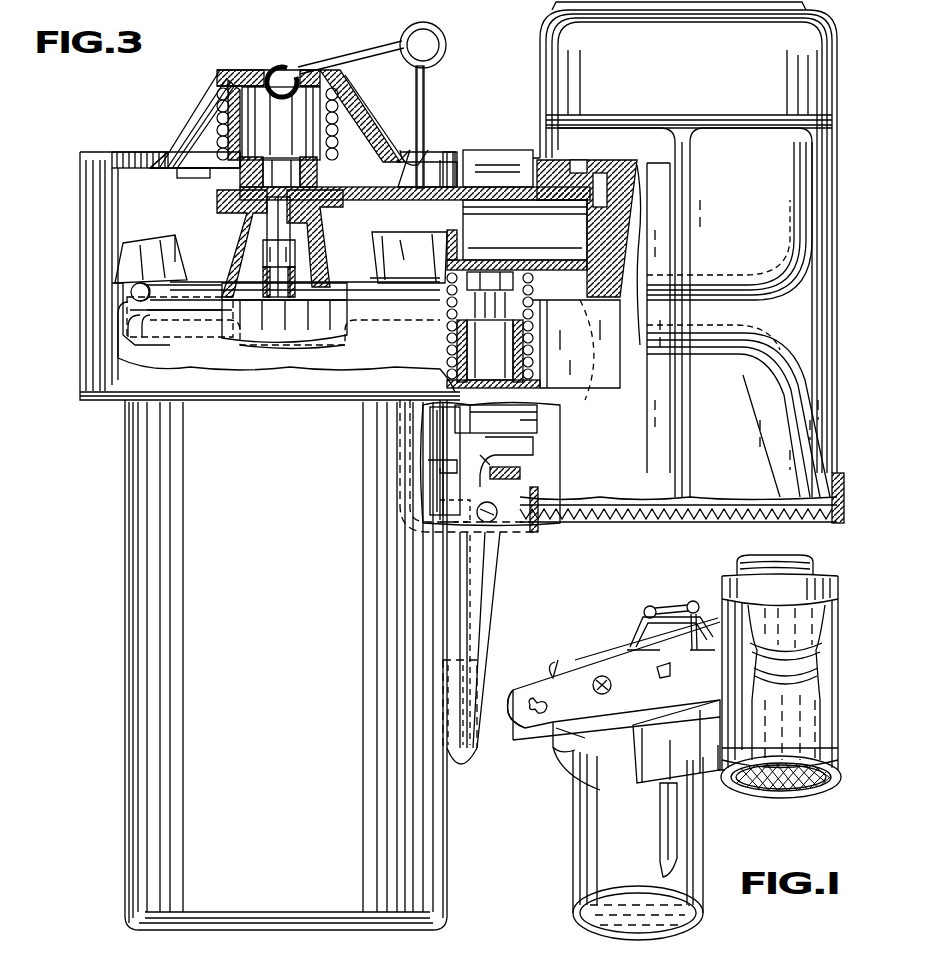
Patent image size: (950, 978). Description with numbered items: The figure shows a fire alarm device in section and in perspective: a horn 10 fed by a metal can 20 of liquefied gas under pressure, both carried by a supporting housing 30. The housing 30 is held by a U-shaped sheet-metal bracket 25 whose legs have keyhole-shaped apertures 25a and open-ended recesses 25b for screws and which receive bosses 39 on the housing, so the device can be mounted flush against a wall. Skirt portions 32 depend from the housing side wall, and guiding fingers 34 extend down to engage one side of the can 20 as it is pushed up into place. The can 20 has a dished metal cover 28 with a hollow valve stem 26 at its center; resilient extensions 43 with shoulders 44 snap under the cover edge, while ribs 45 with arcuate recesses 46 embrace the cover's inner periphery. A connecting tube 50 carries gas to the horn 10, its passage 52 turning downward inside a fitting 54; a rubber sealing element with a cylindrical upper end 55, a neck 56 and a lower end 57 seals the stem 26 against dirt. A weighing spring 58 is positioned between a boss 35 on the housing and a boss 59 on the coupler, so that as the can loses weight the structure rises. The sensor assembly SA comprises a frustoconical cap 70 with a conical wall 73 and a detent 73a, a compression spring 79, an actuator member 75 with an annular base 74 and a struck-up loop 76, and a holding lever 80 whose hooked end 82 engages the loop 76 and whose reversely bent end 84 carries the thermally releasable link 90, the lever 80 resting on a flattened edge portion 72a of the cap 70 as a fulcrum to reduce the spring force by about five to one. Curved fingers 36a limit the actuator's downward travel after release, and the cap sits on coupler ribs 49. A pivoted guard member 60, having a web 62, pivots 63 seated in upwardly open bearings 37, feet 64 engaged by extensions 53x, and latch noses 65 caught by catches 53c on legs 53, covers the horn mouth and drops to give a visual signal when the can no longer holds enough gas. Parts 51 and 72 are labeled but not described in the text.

In FIG. 3, the horn 10 is at (847, 203).
In FIG. 1, the horn 10 is at (812, 630).
In FIG. 3, the metal can 20 is at (286, 665).
In FIG. 1, the metal can 20 is at (592, 850).
In FIG. 1, the U-shaped bracket 25 is at (523, 740).
In FIG. 1, the keyhole shaped apertures 25a is at (537, 716).
In FIG. 1, the open-ended recesses 25b is at (680, 676).
In FIG. 3, the hollow stem 26 is at (300, 280).
In FIG. 3, the dished circular metal cover 28 is at (338, 337).
In FIG. 3, the supporting housing 30 is at (105, 416).
In FIG. 1, the supporting housing 30 is at (614, 685).
In FIG. 3, the skirt portions 32 is at (405, 431).
In FIG. 1, the skirt portions 32 is at (650, 775).
In FIG. 3, the guiding and positioning fingers 34 is at (470, 692).
In FIG. 1, the guiding and positioning fingers 34 is at (664, 822).
In FIG. 3, the spring-positioning boss 35 is at (493, 330).
In FIG. 3, the curved upwardly extending fingers 36a is at (405, 158).
In FIG. 3, the upwardly open bearings 37 is at (445, 517).
In FIG. 1, the bosses 39 is at (596, 679).
In FIG. 3, the downward extensions 43 is at (112, 298).
In FIG. 3, the shoulders 44 is at (135, 318).
In FIG. 3, the ribs 45 is at (150, 272).
In FIG. 3, the arcuate recess 46 is at (136, 298).
In FIG. 3, the ribs 49 is at (200, 178).
In FIG. 3, the connecting tube 50 is at (470, 175).
In FIG. 3, the fitting 51 is at (578, 185).
In FIG. 3, the passage 52 is at (432, 212).
In FIG. 3, the legs 53 is at (480, 420).
In FIG. 3, the catches 53c is at (530, 456).
In FIG. 3, the extensions 53x is at (440, 442).
In FIG. 3, the fitting 54 is at (238, 262).
In FIG. 3, the upper end of sealing element 55 is at (250, 238).
In FIG. 3, the hollow cylindrical neck 56 is at (278, 187).
In FIG. 3, the lower end of sealing element 57 is at (233, 308).
In FIG. 3, the weighing spring 58 is at (537, 352).
In FIG. 3, the boss 59 is at (485, 260).
In FIG. 1, the pivoted guard member 60 is at (820, 801).
In FIG. 3, the web portion 62 is at (512, 505).
In FIG. 3, the pivots 63 is at (478, 517).
In FIG. 3, the feet 64 is at (430, 469).
In FIG. 3, the latch noses 65 is at (522, 477).
In FIG. 3, the cap 70 is at (195, 87).
In FIG. 3, the cap 72 is at (255, 70).
In FIG. 3, the flattened edge portion 72a is at (320, 68).
In FIG. 3, the conical wall 73 is at (206, 102).
In FIG. 3, the detent 73a is at (412, 166).
In FIG. 3, the annular base 74 is at (198, 152).
In FIG. 3, the actuator member 75 is at (338, 138).
In FIG. 3, the loop 76 is at (284, 66).
In FIG. 3, the coiled compression spring 79 is at (345, 108).
In FIG. 3, the holding lever 80 is at (376, 53).
In FIG. 1, the holding lever 80 is at (672, 606).
In FIG. 3, the lever end 82 is at (286, 100).
In FIG. 1, the lever end 82 is at (647, 606).
In FIG. 3, the reversely bent lever end 84 is at (446, 44).
In FIG. 1, the reversely bent lever end 84 is at (696, 601).
In FIG. 3, the thermally releasable link 90 is at (437, 82).
In FIG. 1, the thermally releasable link 90 is at (693, 645).
In FIG. 3, the spring assembly SA is at (172, 116).
In FIG. 1, the spring assembly SA is at (632, 638).